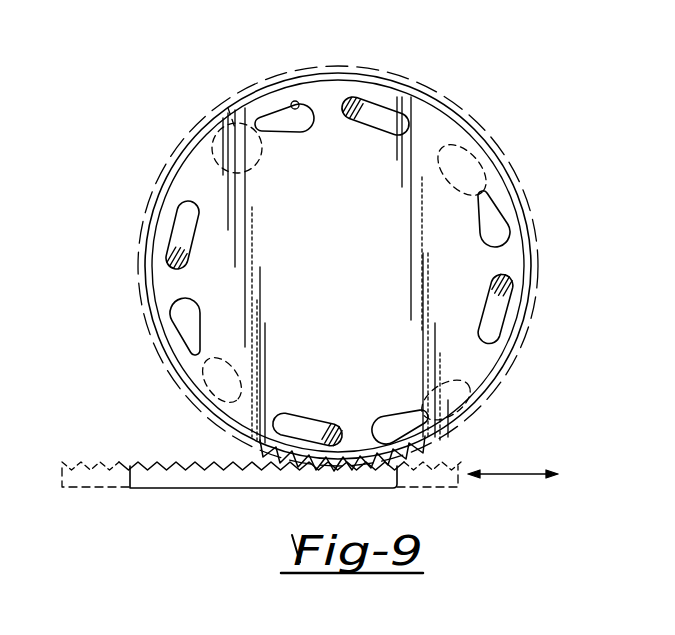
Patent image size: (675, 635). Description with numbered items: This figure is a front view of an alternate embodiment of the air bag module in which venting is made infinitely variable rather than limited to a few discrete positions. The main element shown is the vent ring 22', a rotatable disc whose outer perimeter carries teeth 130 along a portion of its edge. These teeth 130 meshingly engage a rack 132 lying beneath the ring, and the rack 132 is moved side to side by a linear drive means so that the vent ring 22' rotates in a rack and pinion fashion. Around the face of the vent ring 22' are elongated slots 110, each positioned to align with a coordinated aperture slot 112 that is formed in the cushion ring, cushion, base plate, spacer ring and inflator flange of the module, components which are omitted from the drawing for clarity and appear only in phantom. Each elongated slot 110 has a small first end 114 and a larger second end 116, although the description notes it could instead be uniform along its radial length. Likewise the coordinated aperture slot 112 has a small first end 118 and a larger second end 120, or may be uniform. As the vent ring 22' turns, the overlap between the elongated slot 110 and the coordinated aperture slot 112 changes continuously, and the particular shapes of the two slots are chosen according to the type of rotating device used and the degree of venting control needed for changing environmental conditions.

The elongated slot 110 is at (291, 103).
The coordinated aperture slot 112 is at (213, 103).
The small first end 114 is at (255, 115).
The larger second end 116 is at (313, 112).
The small first end 118 is at (191, 146).
The larger second end 120 is at (228, 108).
The teeth 130 is at (437, 441).
The rack 132 is at (156, 466).
The vent ring 22' is at (350, 266).